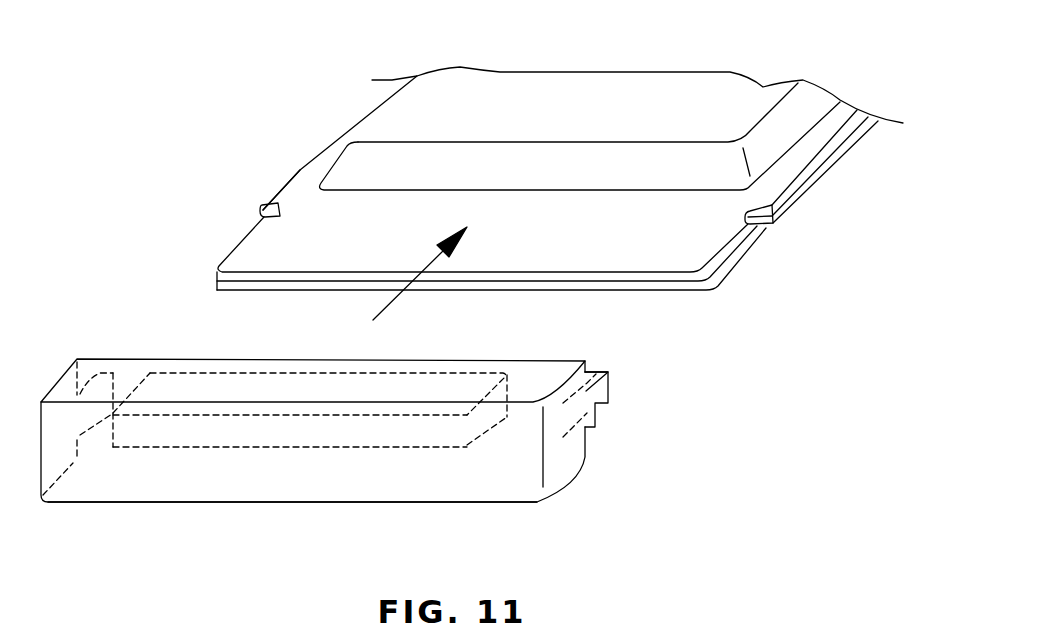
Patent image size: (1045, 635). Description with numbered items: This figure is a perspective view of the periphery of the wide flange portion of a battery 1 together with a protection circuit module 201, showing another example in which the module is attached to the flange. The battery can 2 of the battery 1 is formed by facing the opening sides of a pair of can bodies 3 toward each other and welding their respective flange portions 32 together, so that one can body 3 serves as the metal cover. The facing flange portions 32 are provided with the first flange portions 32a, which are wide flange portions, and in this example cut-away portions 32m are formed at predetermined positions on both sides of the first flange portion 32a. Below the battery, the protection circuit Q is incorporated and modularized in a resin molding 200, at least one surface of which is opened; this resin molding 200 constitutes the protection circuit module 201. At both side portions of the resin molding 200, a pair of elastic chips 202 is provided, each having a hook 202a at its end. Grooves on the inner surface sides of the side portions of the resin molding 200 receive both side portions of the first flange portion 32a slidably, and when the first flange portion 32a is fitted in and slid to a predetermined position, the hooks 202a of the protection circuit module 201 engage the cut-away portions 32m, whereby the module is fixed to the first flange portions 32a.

The battery 1 is at (333, 115).
The battery can 2 is at (637, 113).
The can body 3 is at (520, 90).
The flange portion 32 is at (843, 120).
The first flange portion 32a is at (302, 208).
The cut-away portion 32m is at (257, 210).
The resin molding 200 is at (452, 478).
The protection circuit module 201 is at (205, 520).
The elastic chip 202 is at (608, 392).
The hook 202a is at (592, 368).
The protection circuit Q is at (348, 432).